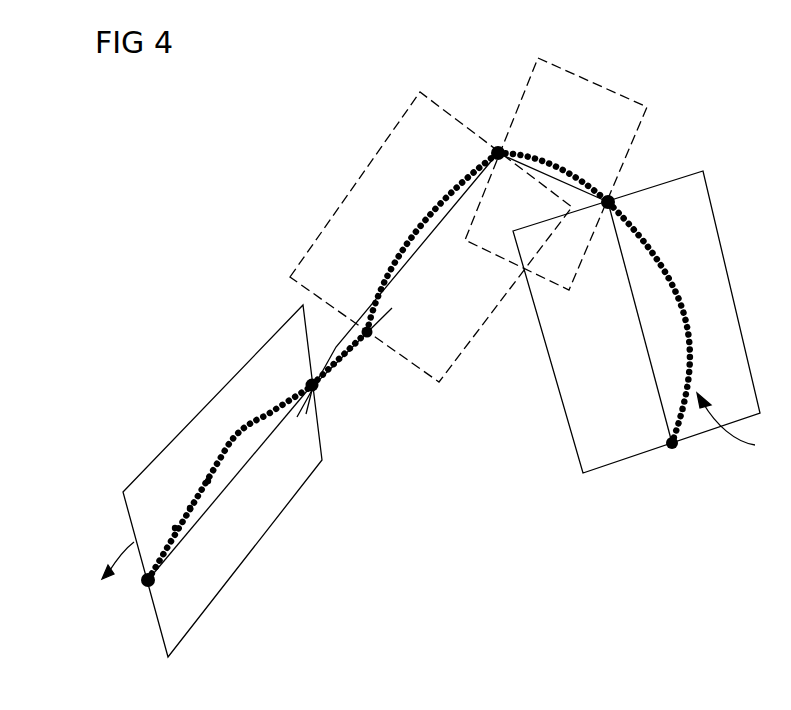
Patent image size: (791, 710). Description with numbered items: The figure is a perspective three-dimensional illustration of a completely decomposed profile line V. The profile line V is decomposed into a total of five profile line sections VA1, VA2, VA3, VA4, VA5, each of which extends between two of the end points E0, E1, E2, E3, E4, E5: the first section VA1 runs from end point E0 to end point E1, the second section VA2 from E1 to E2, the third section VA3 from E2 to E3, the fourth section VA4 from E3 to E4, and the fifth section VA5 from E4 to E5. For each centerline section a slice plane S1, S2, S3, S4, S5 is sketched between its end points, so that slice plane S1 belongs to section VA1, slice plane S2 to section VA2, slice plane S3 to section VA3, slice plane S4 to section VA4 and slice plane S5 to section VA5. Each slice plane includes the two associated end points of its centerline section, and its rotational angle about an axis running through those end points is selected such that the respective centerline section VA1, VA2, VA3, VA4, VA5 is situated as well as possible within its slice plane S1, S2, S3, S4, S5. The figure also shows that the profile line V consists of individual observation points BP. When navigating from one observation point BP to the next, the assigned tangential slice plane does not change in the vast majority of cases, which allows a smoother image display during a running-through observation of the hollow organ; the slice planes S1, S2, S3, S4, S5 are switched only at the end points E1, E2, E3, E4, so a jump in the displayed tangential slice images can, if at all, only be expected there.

The end point E0 is at (147, 583).
The end point E1 is at (316, 388).
The end point E2 is at (372, 332).
The end point E3 is at (498, 147).
The end point E4 is at (609, 200).
The end point E5 is at (672, 448).
The slice plane S1 is at (232, 548).
The slice plane S2 is at (338, 346).
The slice plane S3 is at (330, 221).
The slice plane S4 is at (591, 85).
The slice plane S5 is at (705, 218).
The profile line section VA1 is at (238, 431).
The profile line section VA2 is at (345, 352).
The profile line section VA3 is at (413, 239).
The profile line section VA4 is at (544, 160).
The profile line section VA5 is at (687, 320).
The observation points BP is at (175, 528).
The profile line V is at (735, 425).